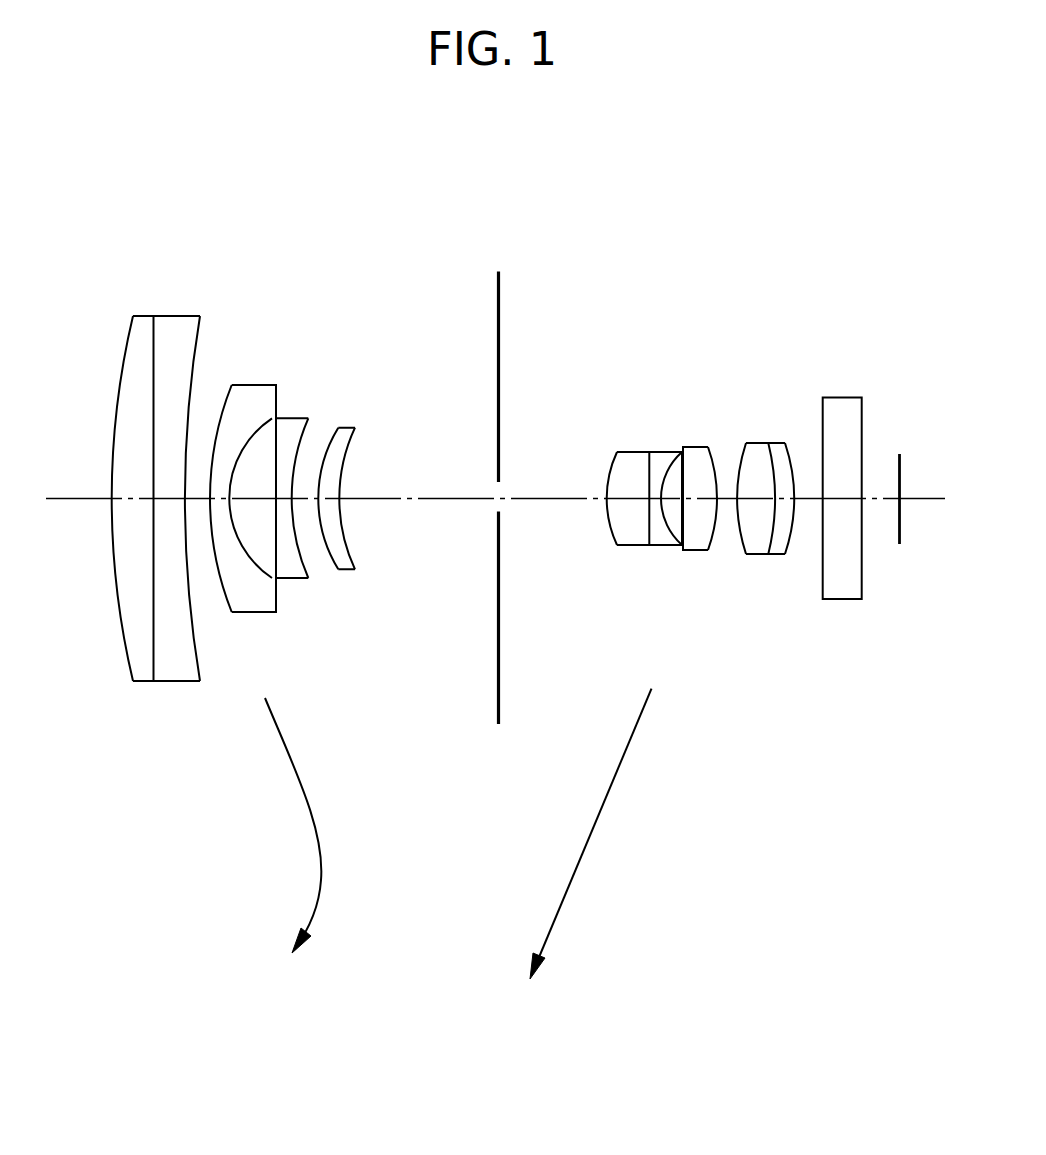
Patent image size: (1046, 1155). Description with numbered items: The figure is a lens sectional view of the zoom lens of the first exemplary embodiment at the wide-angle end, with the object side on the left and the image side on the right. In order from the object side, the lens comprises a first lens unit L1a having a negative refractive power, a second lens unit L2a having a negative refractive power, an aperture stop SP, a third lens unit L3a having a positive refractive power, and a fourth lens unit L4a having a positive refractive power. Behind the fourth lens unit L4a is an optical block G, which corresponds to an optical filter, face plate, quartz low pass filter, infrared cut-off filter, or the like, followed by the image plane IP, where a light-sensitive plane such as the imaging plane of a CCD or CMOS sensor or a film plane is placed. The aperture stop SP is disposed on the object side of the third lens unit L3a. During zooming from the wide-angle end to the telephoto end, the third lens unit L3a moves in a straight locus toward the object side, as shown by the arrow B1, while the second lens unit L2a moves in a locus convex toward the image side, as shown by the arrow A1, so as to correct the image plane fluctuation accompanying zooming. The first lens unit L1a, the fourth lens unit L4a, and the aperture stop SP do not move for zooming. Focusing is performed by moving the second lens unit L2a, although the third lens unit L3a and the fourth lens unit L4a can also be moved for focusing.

The first lens unit L1a is at (101, 274).
The second lens unit L2a is at (210, 274).
The third lens unit L3a is at (604, 274).
The fourth lens unit L4a is at (736, 274).
The aperture stop SP is at (497, 307).
The optical block G is at (867, 274).
The image plane IP is at (900, 480).
The movement locus of second lens unit A1 is at (310, 825).
The movement locus of third lens unit B1 is at (591, 834).